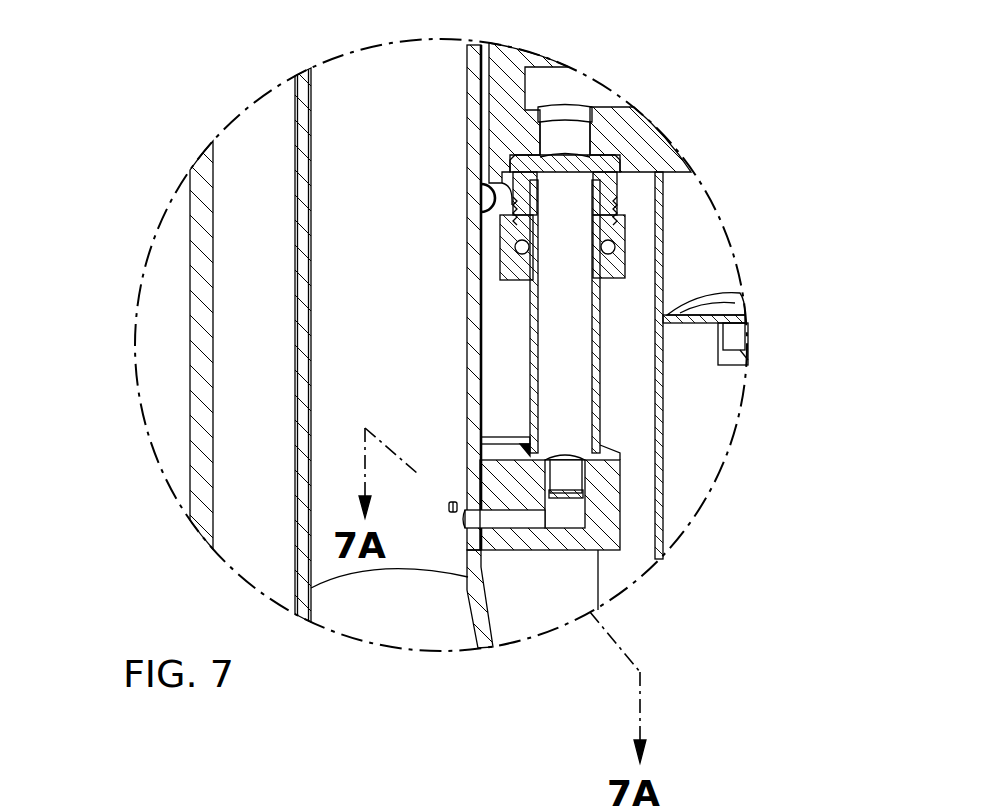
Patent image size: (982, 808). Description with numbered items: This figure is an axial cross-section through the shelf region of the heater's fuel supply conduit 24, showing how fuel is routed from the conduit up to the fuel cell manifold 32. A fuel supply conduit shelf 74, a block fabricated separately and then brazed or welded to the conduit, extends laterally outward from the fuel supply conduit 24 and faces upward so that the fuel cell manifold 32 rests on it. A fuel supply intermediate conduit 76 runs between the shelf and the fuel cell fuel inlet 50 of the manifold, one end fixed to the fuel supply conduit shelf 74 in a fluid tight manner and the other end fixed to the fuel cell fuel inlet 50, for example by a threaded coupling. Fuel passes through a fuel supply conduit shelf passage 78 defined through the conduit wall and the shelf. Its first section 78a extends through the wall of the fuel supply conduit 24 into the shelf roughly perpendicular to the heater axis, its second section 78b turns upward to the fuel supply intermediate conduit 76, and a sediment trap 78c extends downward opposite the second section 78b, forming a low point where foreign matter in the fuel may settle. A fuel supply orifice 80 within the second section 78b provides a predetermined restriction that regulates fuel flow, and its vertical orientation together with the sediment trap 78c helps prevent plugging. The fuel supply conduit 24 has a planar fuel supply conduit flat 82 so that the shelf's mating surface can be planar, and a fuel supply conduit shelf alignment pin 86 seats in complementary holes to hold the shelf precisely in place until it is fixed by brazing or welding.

The fuel supply conduit 24 is at (302, 113).
The fuel cell manifold 32 is at (650, 122).
The fuel cell fuel inlet 50 is at (563, 163).
The fuel supply conduit shelf 74 is at (480, 443).
The fuel supply intermediate conduit 76 is at (530, 328).
The fuel supply conduit shelf passage 78 is at (652, 544).
The fuel supply conduit shelf passage first section 78a is at (493, 522).
The fuel supply conduit shelf passage second section 78b is at (565, 473).
The fuel supply conduit shelf passage sediment trap 78c is at (590, 548).
The fuel supply orifice 80 is at (558, 528).
The fuel supply conduit flat 82 is at (470, 212).
The fuel supply conduit shelf alignment pin 86 is at (450, 508).